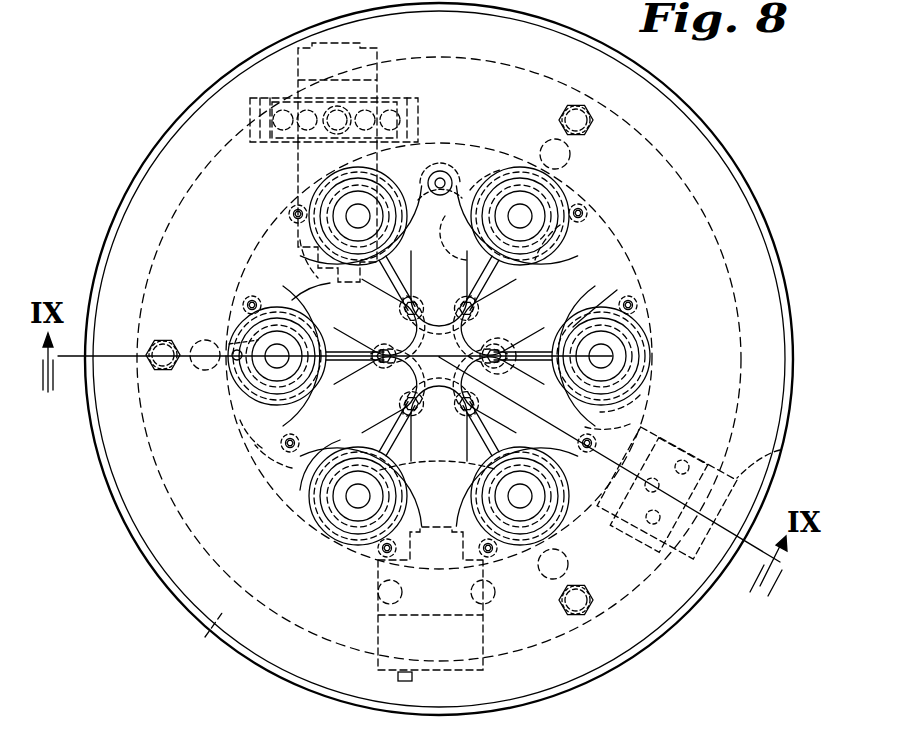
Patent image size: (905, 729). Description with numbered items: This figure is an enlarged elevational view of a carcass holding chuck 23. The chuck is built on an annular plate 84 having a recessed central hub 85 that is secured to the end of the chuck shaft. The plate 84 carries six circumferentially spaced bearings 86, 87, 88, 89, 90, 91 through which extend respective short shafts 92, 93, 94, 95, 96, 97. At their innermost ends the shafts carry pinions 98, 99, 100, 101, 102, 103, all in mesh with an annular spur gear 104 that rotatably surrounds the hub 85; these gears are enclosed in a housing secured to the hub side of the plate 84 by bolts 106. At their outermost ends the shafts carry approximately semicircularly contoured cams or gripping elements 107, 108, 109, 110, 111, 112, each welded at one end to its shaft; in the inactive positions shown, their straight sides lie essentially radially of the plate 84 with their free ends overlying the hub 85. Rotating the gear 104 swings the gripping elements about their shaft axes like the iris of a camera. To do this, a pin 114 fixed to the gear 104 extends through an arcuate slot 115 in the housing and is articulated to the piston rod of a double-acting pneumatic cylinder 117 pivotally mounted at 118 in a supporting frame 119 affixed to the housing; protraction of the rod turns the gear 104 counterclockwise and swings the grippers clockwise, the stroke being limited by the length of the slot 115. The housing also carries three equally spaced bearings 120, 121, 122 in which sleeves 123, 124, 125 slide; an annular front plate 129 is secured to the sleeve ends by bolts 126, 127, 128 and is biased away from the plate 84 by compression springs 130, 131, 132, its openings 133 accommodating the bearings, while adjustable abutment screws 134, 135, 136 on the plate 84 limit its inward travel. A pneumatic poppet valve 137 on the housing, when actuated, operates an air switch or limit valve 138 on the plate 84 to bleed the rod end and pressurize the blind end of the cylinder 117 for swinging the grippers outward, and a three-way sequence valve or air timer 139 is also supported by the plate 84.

The turret disc 23 is at (712, 613).
The annular plate 84 is at (214, 626).
The recessed central hub 85 is at (476, 282).
The bearing 86 is at (262, 331).
The bearing 87 is at (345, 521).
The bearing 88 is at (521, 512).
The bearing 89 is at (631, 366).
The bearing 90 is at (546, 200).
The bearing 91 is at (381, 200).
The short shaft 92 is at (266, 372).
The short shaft 93 is at (358, 500).
The short shaft 94 is at (556, 506).
The short shaft 95 is at (608, 356).
The short shaft 96 is at (531, 217).
The short shaft 97 is at (355, 214).
The pinion 98 is at (292, 304).
The pinion 99 is at (320, 506).
The pinion 100 is at (605, 522).
The pinion 101 is at (655, 350).
The pinion 102 is at (524, 190).
The pinion 103 is at (362, 186).
The annular spur gear 104 is at (545, 246).
The bolts 106 is at (296, 215).
The gripping element 107 is at (283, 440).
The gripping element 108 is at (420, 545).
The gripping element 109 is at (452, 466).
The gripping element 110 is at (593, 288).
The gripping element 111 is at (470, 188).
The gripping element 112 is at (298, 241).
The pin 114 is at (409, 336).
The arcuate slot 115 is at (409, 373).
The double-acting pneumatic cylinder 117 is at (300, 158).
The pivot mounting 118 is at (362, 120).
The supporting frame 119 is at (270, 100).
The bearing 120 is at (262, 449).
The bearing 121 is at (658, 437).
The bearing 122 is at (458, 180).
The sleeve 123 is at (300, 490).
The sleeve 124 is at (640, 395).
The sleeve 125 is at (440, 178).
The bolt 126 is at (292, 468).
The bolt 127 is at (622, 425).
The bolt 128 is at (470, 218).
The annular front plate 129 is at (605, 650).
The compression spring 130 is at (198, 369).
The compression spring 131 is at (570, 566).
The compression spring 132 is at (548, 142).
The openings 133 is at (236, 352).
The adjustable abutment screw 134 is at (155, 349).
The adjustable abutment screw 135 is at (592, 604).
The adjustable abutment screw 136 is at (577, 104).
The pneumatic poppet valve 137 is at (522, 342).
The air switch or limit valve 138 is at (780, 450).
The three-way sequence valve or air timer 139 is at (492, 640).